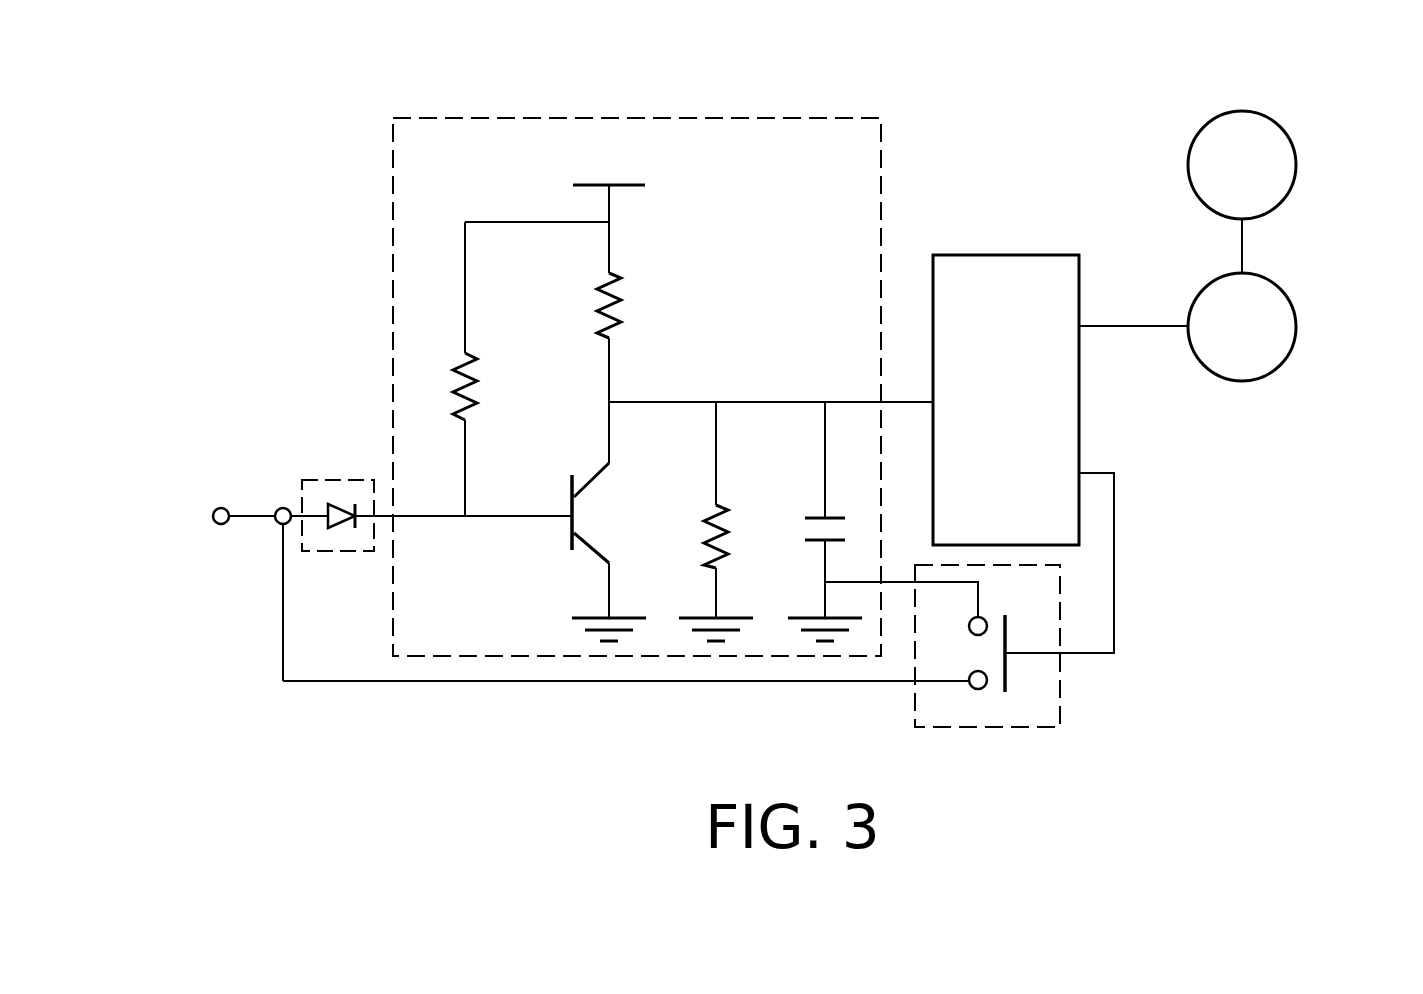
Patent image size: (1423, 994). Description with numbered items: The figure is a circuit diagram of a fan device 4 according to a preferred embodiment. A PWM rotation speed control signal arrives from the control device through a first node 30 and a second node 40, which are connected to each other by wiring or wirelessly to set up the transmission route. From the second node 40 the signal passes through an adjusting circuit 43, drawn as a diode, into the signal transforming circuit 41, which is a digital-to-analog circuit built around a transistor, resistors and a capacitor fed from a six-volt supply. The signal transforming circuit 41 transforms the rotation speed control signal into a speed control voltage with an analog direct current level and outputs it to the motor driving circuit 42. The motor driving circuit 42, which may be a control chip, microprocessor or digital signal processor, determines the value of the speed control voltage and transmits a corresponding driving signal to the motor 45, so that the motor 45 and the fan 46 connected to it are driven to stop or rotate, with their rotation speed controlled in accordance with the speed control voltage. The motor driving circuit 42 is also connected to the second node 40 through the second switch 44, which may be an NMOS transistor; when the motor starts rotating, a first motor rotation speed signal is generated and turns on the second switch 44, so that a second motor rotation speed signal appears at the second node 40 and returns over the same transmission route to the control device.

The fan device 4 is at (300, 70).
The first node 30 is at (225, 508).
The second node 40 is at (288, 508).
The signal transforming circuit 41 is at (881, 160).
The motor driving circuit 42 is at (993, 255).
The adjusting circuit 43 is at (337, 480).
The second switch 44 is at (1060, 690).
The motor 45 is at (1296, 320).
The fan 46 is at (1296, 160).